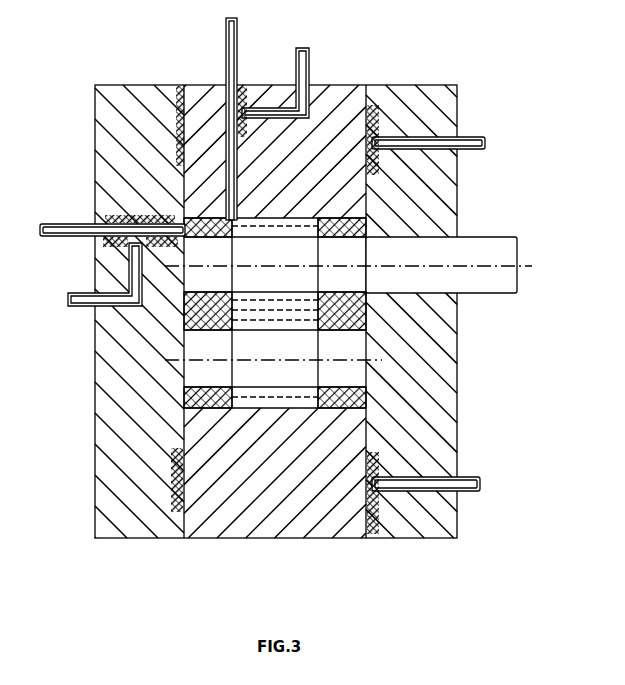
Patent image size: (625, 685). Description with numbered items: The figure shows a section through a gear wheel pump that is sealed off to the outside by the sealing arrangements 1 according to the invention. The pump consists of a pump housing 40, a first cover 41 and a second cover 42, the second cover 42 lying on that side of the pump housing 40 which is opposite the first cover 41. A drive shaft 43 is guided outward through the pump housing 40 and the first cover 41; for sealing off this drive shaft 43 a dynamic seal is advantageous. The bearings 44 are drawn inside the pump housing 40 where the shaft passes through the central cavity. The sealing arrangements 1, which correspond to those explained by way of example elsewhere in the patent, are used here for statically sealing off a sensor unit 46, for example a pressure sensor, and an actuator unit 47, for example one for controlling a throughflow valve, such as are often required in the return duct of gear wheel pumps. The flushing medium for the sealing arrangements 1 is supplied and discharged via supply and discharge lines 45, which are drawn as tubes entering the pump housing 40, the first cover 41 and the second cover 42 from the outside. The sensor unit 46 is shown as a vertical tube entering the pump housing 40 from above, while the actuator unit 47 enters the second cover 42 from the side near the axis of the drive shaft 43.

The sealing arrangement 1 is at (178, 88).
The pump housing 40 is at (348, 105).
The first cover 41 is at (435, 353).
The second cover 42 is at (110, 450).
The drive shaft 43 is at (507, 253).
The bearing 44 is at (281, 244).
The supply and discharge lines 45 is at (302, 68).
The sensor unit 46 is at (230, 68).
The actuator unit 47 is at (70, 226).